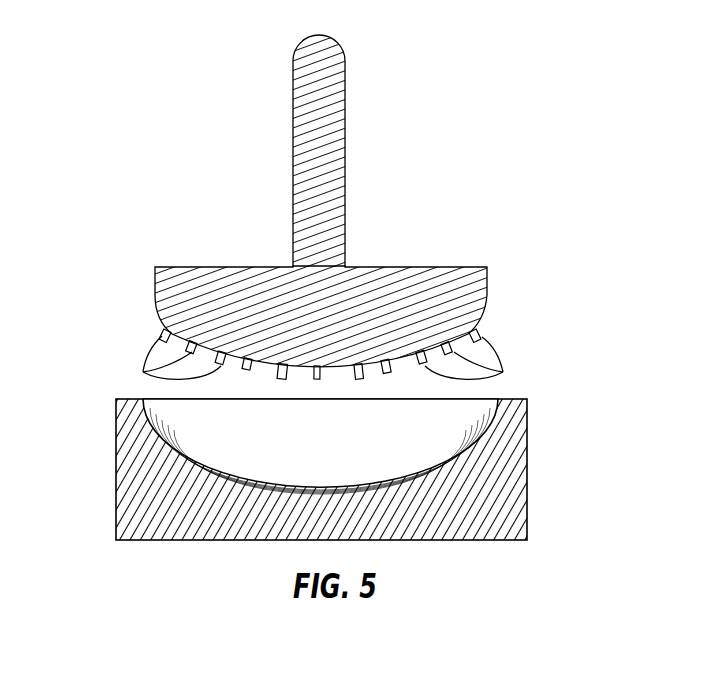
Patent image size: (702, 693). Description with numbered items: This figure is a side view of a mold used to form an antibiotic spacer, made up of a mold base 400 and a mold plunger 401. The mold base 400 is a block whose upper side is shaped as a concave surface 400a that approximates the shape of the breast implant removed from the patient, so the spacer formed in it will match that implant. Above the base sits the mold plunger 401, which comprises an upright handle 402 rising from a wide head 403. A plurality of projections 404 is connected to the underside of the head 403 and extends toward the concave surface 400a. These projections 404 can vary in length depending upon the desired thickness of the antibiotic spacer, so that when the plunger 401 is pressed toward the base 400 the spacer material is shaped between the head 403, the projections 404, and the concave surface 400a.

The mold base 400 is at (116, 470).
The concave surface 400a is at (352, 486).
The mold plunger 401 is at (271, 116).
The handle 402 is at (335, 113).
The head 403 is at (408, 290).
The projections 404 is at (143, 373).